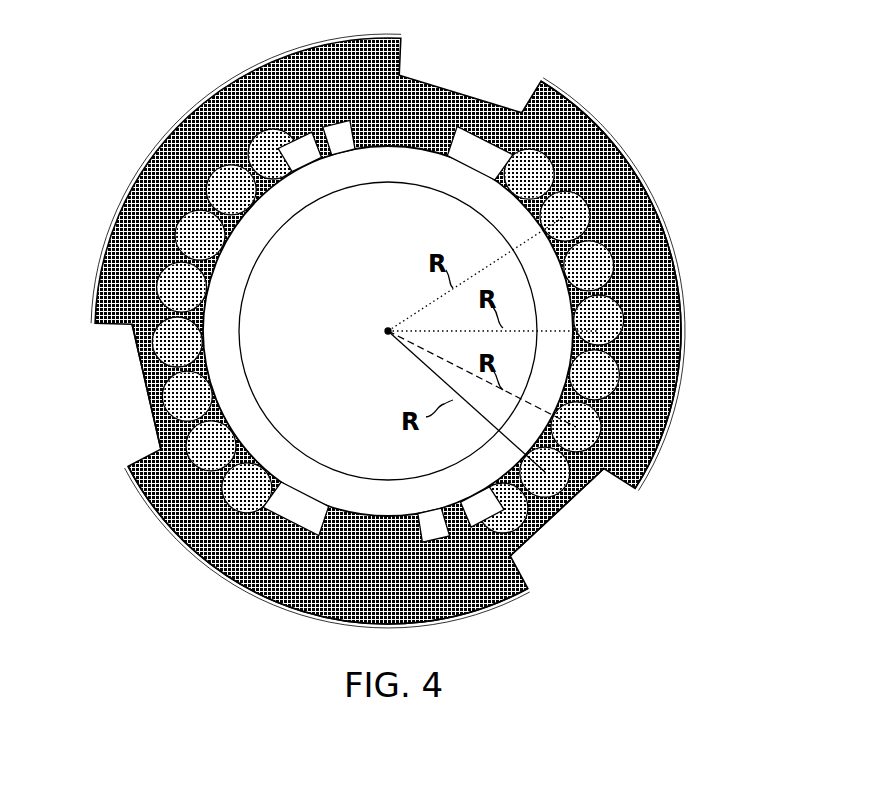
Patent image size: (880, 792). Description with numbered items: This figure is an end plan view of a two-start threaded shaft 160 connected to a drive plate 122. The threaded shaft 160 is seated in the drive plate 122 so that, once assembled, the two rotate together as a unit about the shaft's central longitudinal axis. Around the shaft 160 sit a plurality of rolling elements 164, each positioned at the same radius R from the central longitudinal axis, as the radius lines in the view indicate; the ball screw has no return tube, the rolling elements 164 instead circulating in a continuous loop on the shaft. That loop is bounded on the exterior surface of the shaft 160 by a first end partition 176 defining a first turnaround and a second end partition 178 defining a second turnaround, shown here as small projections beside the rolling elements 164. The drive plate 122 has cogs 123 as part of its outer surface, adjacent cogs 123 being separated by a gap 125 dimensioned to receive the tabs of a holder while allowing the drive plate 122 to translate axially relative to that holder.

The drive plate 122 is at (638, 304).
The cogs 123 is at (676, 394).
The gap 125 is at (150, 412).
The threaded shaft 160 is at (276, 222).
The rolling elements 164 is at (176, 293).
The first end partition 176 is at (480, 142).
The second end partition 178 is at (320, 148).